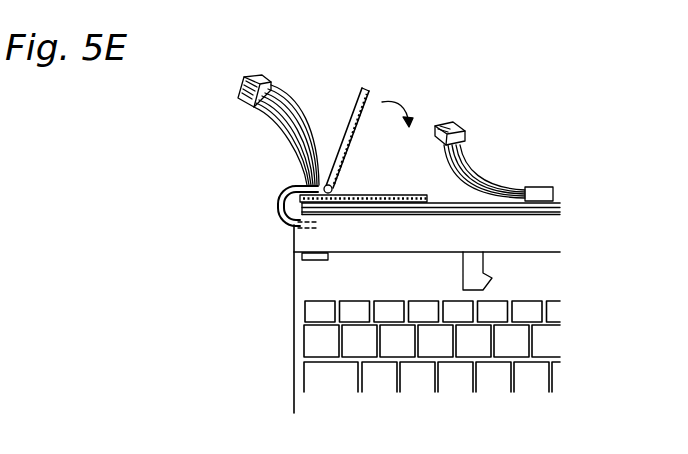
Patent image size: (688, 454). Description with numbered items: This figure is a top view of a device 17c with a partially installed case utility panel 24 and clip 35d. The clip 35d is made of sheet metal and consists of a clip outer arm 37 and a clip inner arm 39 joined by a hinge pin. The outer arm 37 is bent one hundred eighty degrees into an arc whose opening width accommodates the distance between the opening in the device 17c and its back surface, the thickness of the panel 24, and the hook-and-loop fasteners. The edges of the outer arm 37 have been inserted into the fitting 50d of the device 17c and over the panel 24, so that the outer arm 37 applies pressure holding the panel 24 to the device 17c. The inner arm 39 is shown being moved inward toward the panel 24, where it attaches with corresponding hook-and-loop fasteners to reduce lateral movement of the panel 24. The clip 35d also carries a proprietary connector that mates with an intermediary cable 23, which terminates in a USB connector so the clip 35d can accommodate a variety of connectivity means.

The device 17c is at (307, 292).
The panel 24 is at (478, 207).
The clip outer arm 37 is at (265, 195).
The fitting 50d is at (265, 228).
The clip inner arm 39 is at (372, 85).
The clip 35d is at (221, 151).
The intermediary cable 23 is at (480, 163).